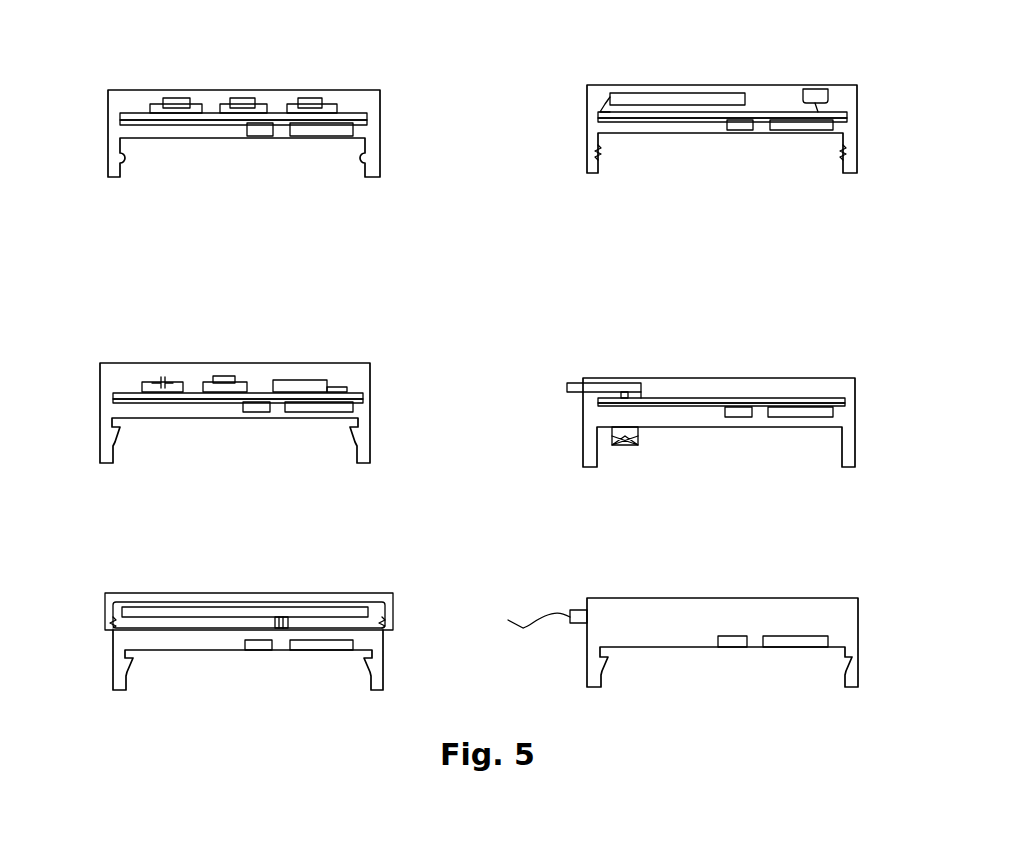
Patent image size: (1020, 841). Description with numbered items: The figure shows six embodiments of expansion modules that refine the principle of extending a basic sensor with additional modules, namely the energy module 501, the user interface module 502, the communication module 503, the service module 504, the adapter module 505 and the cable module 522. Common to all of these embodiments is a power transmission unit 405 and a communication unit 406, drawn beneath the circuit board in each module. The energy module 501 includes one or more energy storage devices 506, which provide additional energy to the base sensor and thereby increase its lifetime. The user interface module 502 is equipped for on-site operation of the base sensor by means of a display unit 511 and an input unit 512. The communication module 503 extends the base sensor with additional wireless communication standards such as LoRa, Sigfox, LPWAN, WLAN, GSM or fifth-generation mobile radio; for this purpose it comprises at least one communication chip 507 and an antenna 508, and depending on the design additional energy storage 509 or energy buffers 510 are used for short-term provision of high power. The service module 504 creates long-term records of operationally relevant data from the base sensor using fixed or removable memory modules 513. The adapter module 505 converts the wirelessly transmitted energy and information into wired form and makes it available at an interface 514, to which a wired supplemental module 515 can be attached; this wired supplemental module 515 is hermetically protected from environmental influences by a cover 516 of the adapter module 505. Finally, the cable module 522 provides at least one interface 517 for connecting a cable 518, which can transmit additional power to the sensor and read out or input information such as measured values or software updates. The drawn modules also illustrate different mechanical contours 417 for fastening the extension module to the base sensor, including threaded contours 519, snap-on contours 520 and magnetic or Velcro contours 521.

The energy module 501 is at (108, 97).
The user interface module 502 is at (857, 110).
The communication module 503 is at (100, 372).
The service module 504 is at (857, 402).
The adapter module 505 is at (108, 633).
The cable module 522 is at (860, 617).
The power transmission unit 405 is at (325, 137).
The communication unit 406 is at (260, 137).
The mechanical contour 417 is at (120, 158).
The energy storage device 506 is at (173, 96).
The communication chip 507 is at (290, 376).
The antenna 508 is at (341, 387).
The energy storage 509 is at (231, 374).
The energy buffer 510 is at (173, 374).
The display unit 511 is at (679, 93).
The input unit 512 is at (818, 89).
The memory module 513 is at (570, 382).
The interface 514 is at (295, 623).
The wired supplemental module 515 is at (192, 602).
The cover 516 is at (385, 592).
The interface 517 is at (580, 608).
The cable 518 is at (542, 610).
The threaded contour 519 is at (604, 156).
The snap-on contour 520 is at (117, 441).
The magnetic contour 521 is at (628, 450).